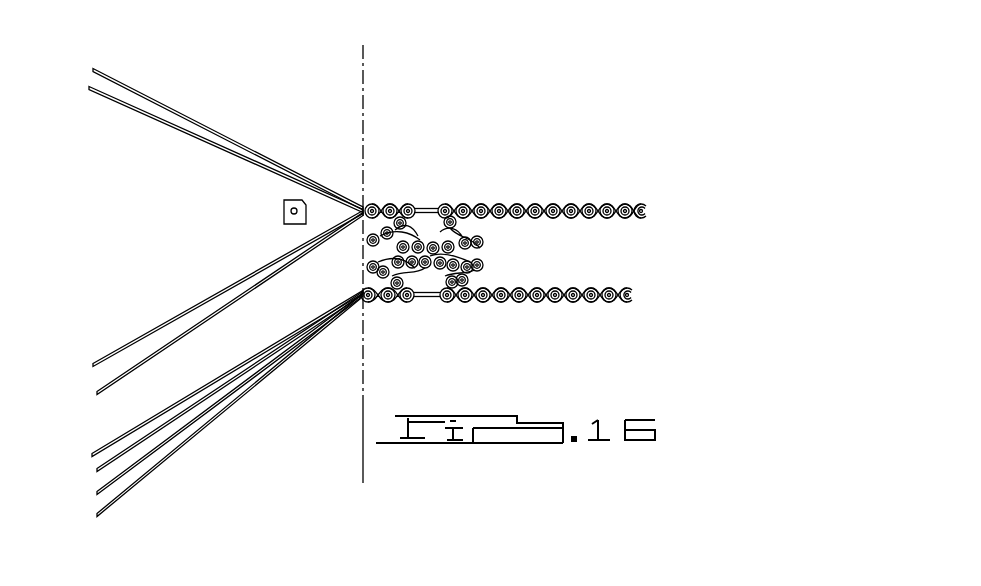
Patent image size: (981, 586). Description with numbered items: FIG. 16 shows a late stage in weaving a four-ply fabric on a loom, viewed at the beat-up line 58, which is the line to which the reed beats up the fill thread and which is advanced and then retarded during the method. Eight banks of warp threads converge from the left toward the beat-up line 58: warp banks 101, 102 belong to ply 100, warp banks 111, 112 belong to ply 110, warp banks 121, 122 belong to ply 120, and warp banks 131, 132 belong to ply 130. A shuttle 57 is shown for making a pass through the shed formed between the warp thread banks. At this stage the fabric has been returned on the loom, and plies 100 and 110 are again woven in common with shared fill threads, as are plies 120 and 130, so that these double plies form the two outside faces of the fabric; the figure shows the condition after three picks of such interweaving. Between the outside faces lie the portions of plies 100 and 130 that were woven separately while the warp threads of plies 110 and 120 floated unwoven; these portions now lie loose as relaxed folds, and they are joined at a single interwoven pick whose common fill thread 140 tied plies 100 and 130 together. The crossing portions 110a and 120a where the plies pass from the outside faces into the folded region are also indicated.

The shuttle 57 is at (284, 211).
The beat-up line 58 is at (364, 73).
The ply 100 is at (462, 151).
The ply 110 is at (462, 151).
The crossing portion of first cord 110a is at (427, 175).
The warp bank 101 is at (93, 70).
The warp bank 111 is at (89, 88).
The warp bank 102 is at (93, 365).
The warp bank 112 is at (97, 393).
The ply 120 is at (471, 337).
The ply 130 is at (471, 337).
The crossing portion of second cord 120a is at (441, 326).
The warp bank 121 is at (92, 455).
The warp bank 122 is at (97, 470).
The warp bank 131 is at (97, 493).
The warp bank 132 is at (97, 515).
The fill thread of the interwoven pick 140 is at (428, 257).